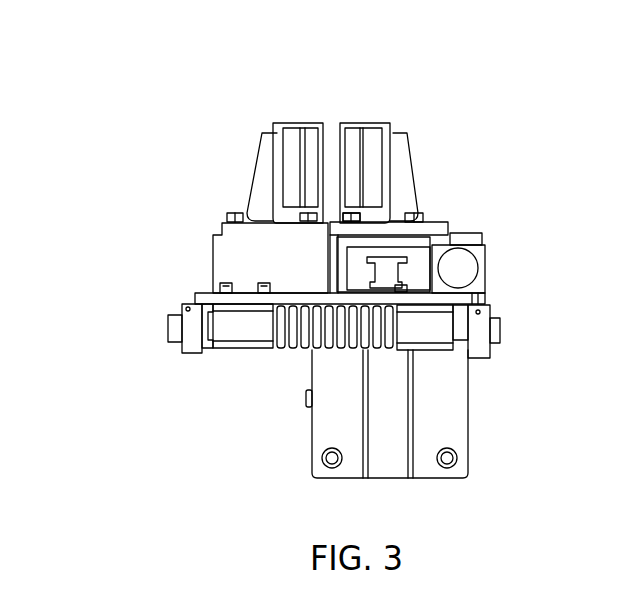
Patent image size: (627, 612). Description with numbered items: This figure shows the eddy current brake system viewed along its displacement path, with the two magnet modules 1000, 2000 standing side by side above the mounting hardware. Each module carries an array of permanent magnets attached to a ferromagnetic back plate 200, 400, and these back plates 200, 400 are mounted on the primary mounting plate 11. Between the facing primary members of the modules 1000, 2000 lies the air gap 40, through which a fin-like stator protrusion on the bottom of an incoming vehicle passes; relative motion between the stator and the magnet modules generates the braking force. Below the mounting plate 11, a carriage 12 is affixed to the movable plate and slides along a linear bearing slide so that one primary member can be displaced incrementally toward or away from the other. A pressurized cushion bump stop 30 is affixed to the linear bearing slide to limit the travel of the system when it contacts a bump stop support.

The module 1000 is at (222, 190).
The air gap 40 is at (332, 128).
The back plate 400 is at (370, 145).
The back plate 200 is at (288, 160).
The module 2000 is at (271, 118).
The primary mounting plate 11 is at (197, 293).
The carriage 12 is at (413, 270).
The cushion bump stop 30 is at (486, 272).